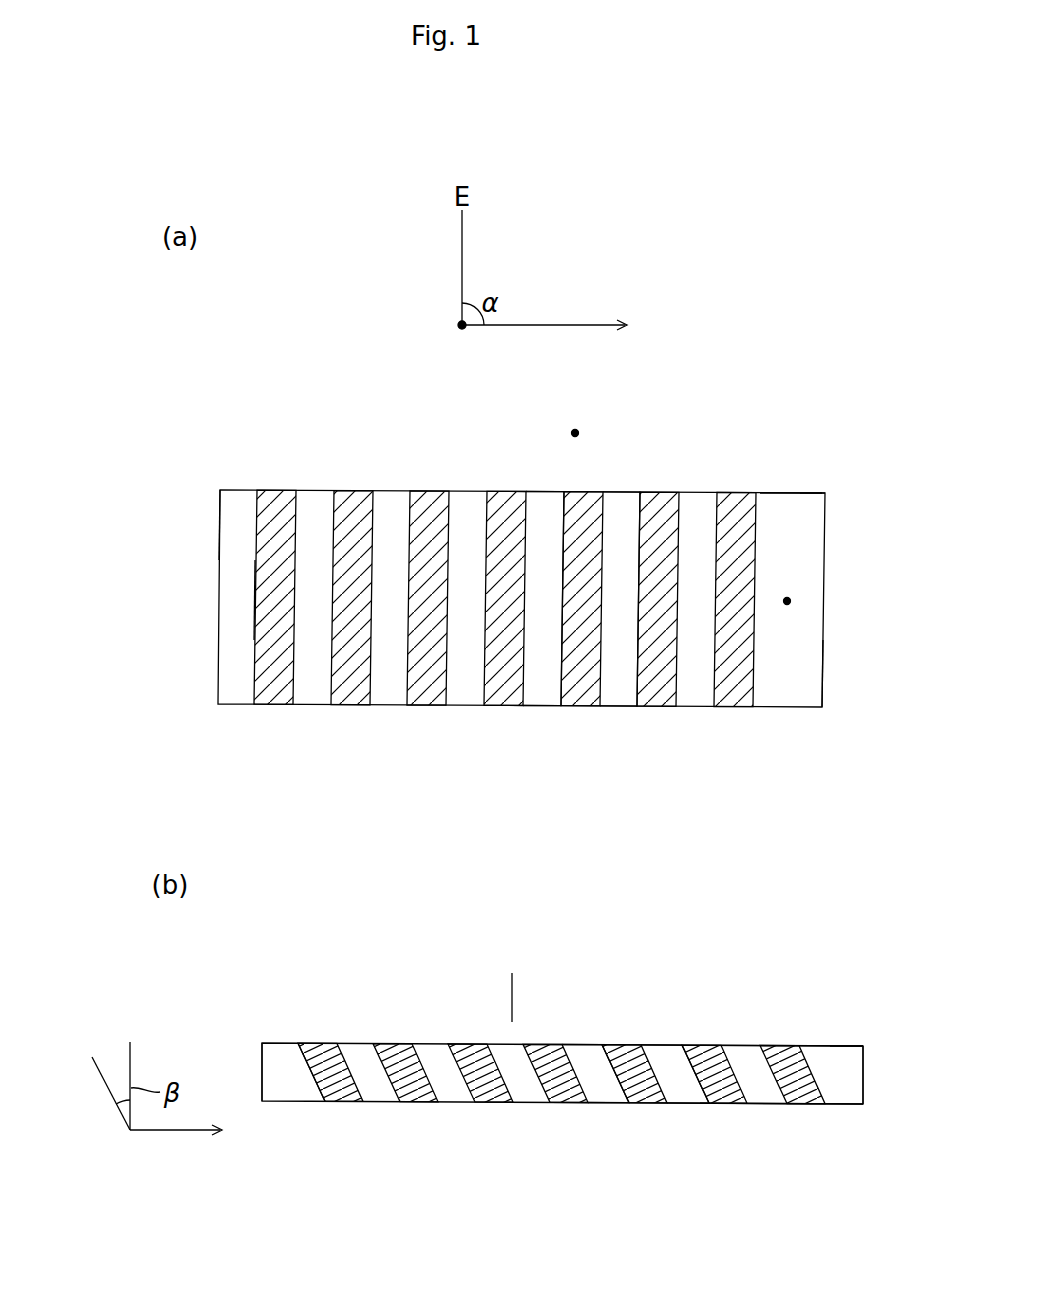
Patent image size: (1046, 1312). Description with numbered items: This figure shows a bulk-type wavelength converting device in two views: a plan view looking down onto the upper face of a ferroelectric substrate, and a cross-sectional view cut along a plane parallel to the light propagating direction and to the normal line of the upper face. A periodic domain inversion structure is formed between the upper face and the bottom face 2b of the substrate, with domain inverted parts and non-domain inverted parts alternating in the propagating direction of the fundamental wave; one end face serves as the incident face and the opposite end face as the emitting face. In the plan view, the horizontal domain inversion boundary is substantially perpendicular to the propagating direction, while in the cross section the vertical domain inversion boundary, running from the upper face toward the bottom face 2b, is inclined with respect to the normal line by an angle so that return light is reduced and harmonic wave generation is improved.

The bottom face 2b is at (767, 1104).